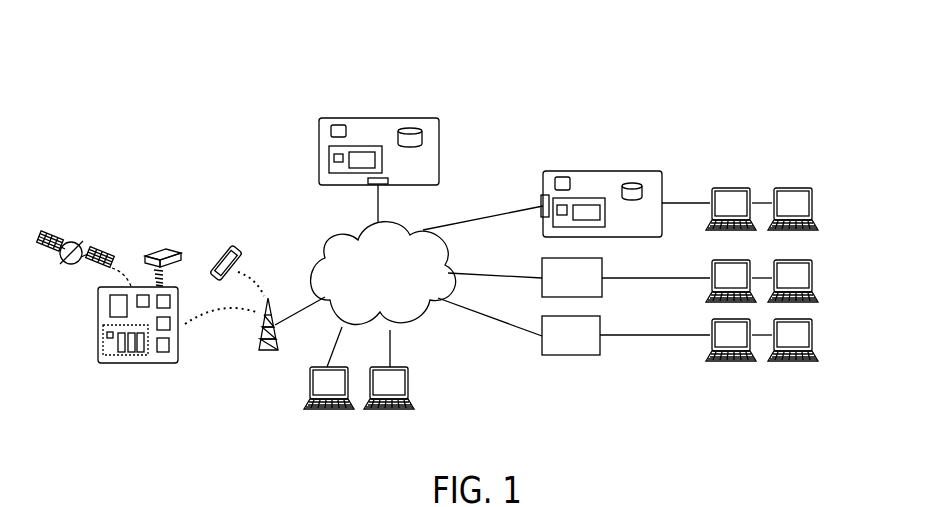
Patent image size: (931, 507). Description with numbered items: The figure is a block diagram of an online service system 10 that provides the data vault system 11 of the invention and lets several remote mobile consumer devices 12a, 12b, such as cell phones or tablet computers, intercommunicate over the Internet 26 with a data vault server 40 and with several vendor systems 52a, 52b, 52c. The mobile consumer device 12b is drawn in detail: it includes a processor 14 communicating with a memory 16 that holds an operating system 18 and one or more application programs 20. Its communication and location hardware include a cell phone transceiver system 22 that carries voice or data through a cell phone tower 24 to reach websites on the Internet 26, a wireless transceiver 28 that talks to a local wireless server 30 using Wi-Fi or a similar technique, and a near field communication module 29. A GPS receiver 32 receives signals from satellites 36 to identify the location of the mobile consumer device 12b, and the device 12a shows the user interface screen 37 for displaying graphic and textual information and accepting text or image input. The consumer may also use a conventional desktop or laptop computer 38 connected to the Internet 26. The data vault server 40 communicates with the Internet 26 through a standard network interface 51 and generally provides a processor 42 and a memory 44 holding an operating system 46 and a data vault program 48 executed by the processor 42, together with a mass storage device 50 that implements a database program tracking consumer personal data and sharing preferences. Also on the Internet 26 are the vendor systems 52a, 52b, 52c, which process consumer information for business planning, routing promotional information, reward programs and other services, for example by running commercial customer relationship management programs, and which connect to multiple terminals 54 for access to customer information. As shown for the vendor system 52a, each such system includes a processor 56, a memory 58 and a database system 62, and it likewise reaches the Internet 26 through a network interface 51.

The online service system 10 is at (556, 44).
The data vault system 11 is at (556, 84).
The mobile consumer device 12a is at (232, 247).
The mobile consumer device 12b is at (150, 375).
The processor 14 is at (110, 302).
The memory 16 is at (103, 350).
The operating system 18 is at (107, 335).
The application programs 20 is at (140, 352).
The cell phone transceiver system 22 is at (164, 352).
The cell phone tower 24 is at (266, 350).
The Internet 26 is at (371, 288).
The wireless transceiver 28 is at (170, 301).
The near field communication module 29 is at (170, 323).
The local wireless server 30 is at (170, 250).
The GPS receiver 32 is at (143, 295).
The satellites 36 is at (78, 243).
The user interface screen 37 is at (238, 262).
The laptop computer 38 is at (390, 413).
The data vault server 40 is at (450, 96).
The processor 42 is at (336, 125).
The memory 44 is at (329, 165).
The operating system 46 is at (334, 158).
The data vault program 48 is at (365, 152).
The mass storage device 50 is at (422, 136).
The network interface 51 is at (368, 182).
The vendor system 52a is at (602, 171).
The vendor system 52b is at (556, 289).
The vendor system 52c is at (587, 347).
The terminals 54 is at (793, 188).
The processor 56 is at (555, 184).
The memory 58 is at (580, 198).
The database system 62 is at (632, 183).